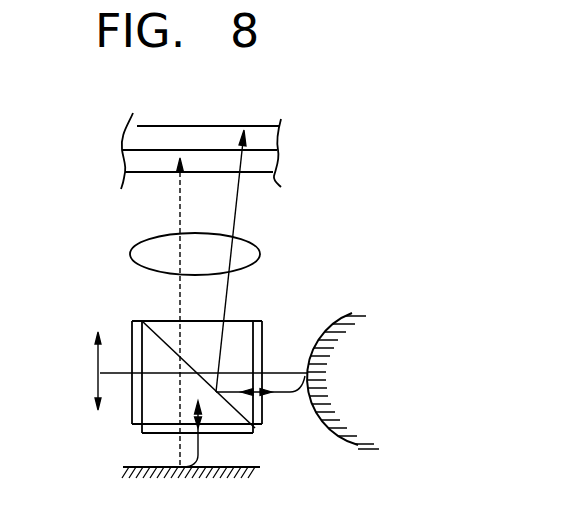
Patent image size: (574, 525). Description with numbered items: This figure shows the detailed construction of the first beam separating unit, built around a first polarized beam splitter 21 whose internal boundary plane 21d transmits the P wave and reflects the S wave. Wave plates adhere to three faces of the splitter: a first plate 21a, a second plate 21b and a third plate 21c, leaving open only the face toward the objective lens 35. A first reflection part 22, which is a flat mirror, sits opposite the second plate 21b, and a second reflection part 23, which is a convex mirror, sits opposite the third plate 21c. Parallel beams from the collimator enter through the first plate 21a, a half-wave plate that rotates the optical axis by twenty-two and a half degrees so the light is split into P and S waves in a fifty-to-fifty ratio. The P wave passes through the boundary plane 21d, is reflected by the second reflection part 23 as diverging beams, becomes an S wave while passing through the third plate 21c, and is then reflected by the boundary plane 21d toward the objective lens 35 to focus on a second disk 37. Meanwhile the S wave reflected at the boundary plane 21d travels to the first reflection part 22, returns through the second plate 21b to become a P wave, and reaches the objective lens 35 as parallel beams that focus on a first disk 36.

The first polarized beam splitter 21 is at (247, 321).
The first plate 21a is at (137, 320).
The second plate 21b is at (262, 427).
The third plate 21c is at (262, 320).
The boundary plane 21d is at (190, 364).
The first reflection part 22 is at (256, 467).
The second reflection part 23 is at (348, 381).
The objective lens 35 is at (260, 254).
The first disk 36 is at (264, 168).
The second disk 37 is at (138, 128).